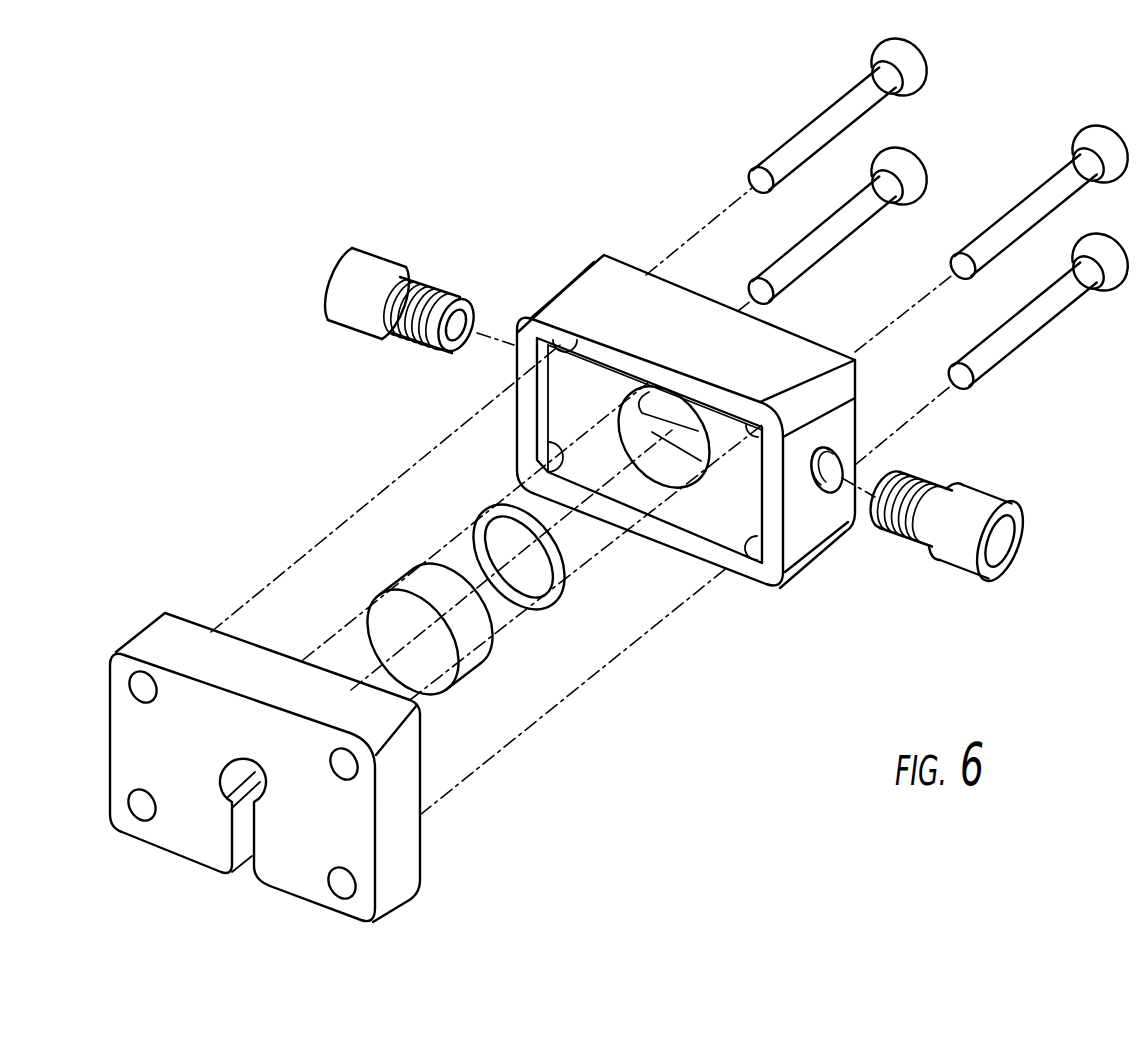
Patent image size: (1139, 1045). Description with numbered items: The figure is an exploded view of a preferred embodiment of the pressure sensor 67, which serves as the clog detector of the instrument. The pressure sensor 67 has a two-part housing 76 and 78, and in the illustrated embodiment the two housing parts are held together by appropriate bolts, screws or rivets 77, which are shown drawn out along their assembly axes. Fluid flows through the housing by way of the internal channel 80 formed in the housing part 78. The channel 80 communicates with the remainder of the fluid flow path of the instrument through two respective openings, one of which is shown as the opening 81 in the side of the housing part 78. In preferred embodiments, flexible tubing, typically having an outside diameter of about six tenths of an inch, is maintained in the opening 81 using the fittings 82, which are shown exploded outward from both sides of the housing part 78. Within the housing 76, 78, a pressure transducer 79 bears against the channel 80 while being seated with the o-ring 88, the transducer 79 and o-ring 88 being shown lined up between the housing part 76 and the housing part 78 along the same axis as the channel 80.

The pressure sensor 67 is at (423, 198).
The housing part 76 is at (186, 764).
The bolts, screws or rivets 77 is at (821, 127).
The housing part 78 is at (686, 421).
The pressure transducer 79 is at (465, 627).
The internal channel 80 is at (665, 408).
The opening 81 is at (829, 490).
The fittings 82 is at (336, 300).
The o-ring 88 is at (563, 560).